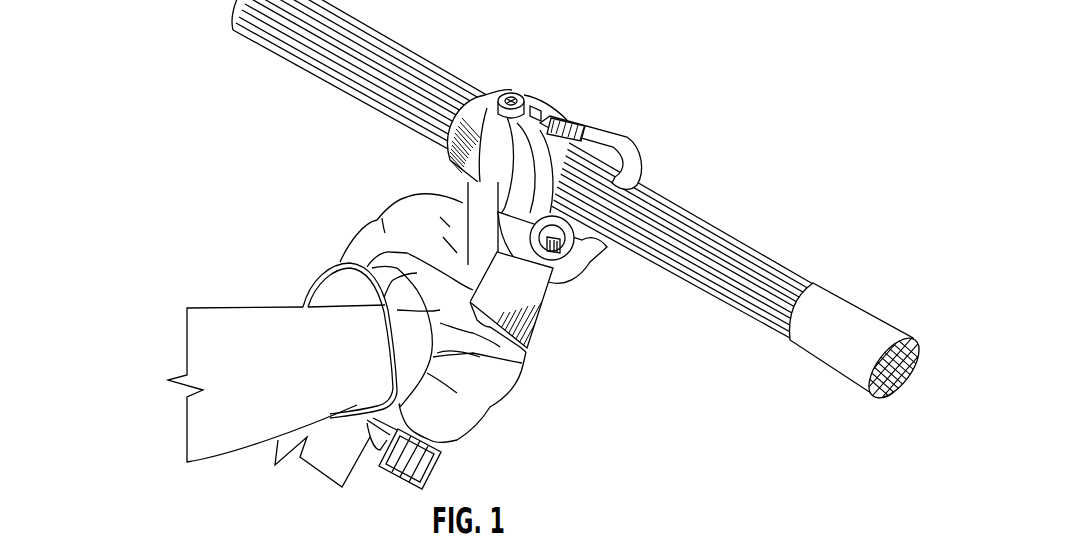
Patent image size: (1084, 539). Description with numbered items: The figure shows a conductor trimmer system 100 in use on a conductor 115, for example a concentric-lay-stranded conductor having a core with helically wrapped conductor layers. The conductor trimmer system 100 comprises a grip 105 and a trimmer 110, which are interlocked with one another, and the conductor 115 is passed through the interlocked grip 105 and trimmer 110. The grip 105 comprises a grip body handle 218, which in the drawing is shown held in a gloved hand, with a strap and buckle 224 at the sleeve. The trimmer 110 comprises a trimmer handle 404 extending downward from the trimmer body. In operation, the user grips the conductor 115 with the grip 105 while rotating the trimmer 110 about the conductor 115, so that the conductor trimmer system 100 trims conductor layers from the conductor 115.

The conductor trimmer system 100 is at (572, 178).
The grip 105 is at (518, 79).
The trimmer 110 is at (618, 132).
The conductor 115 is at (723, 252).
The grip body handle 218 is at (467, 203).
The sleeve strap and buckle 224 is at (304, 423).
The trimmer handle 404 is at (510, 300).